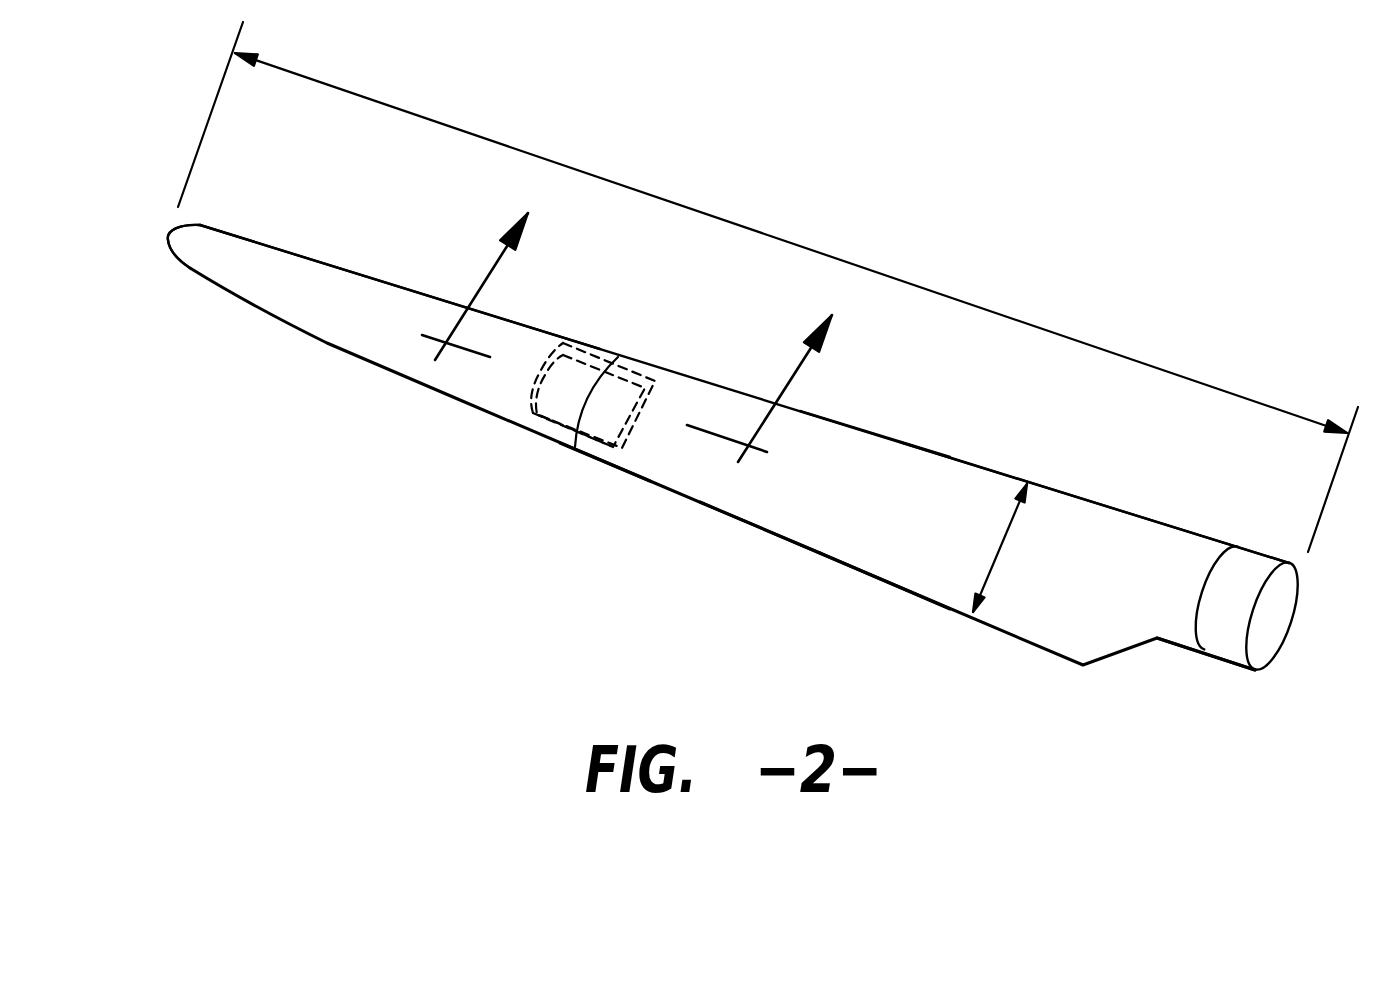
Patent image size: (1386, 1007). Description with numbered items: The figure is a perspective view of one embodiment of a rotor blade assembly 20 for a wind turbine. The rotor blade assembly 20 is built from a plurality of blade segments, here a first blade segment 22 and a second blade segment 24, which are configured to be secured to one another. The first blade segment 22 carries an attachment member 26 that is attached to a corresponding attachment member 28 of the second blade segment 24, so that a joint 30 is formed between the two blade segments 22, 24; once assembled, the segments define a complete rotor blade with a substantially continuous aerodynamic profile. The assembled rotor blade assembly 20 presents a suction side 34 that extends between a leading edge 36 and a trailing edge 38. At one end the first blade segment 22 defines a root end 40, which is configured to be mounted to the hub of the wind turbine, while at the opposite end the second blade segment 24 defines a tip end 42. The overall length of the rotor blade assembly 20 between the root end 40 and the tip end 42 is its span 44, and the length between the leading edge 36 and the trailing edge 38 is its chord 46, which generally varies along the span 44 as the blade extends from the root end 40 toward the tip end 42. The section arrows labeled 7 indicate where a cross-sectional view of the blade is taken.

The rotor blade assembly 20 is at (728, 423).
The first blade segment 22 is at (987, 463).
The second blade segment 24 is at (298, 252).
The attachment member 26 is at (592, 455).
The corresponding attachment member 28 is at (542, 423).
The joint 30 is at (618, 357).
The suction side 34 is at (880, 545).
The leading edge 36 is at (875, 432).
The trailing edge 38 is at (777, 537).
The root end 40 is at (1253, 568).
The tip end 42 is at (172, 230).
The span 44 is at (763, 230).
The chord 46 is at (997, 557).
The section line for FIG. 7 is at (645, 337).